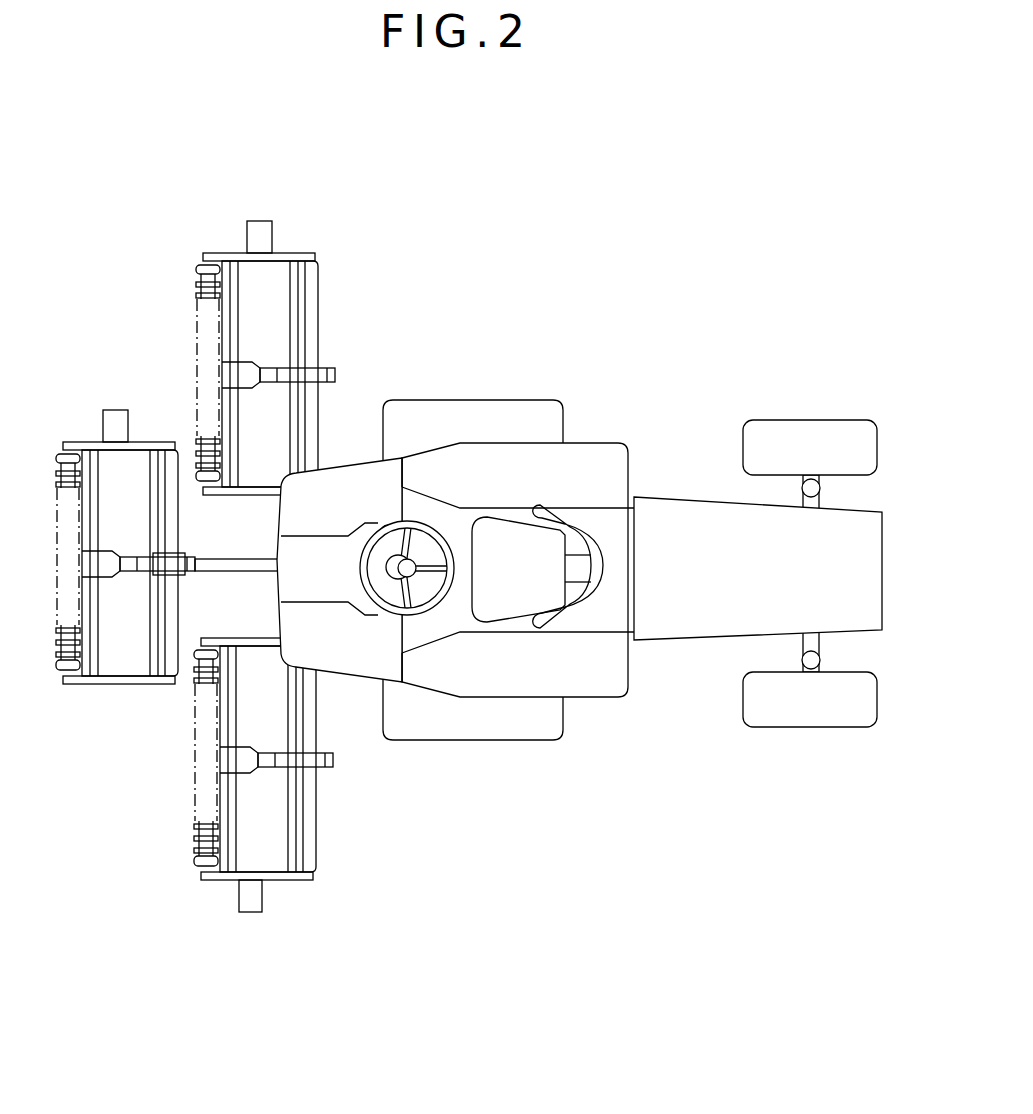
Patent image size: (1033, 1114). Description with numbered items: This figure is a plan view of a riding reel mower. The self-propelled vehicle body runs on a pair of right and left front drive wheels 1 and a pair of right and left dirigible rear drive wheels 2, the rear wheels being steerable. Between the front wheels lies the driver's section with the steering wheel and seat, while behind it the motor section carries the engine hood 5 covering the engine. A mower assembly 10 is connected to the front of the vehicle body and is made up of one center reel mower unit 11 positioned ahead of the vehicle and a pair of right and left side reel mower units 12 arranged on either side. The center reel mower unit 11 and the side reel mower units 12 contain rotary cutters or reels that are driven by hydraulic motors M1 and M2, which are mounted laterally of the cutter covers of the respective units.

The front drive wheels 1 is at (472, 418).
The rear drive wheels 2 is at (780, 420).
The engine hood 5 is at (683, 508).
The mower assembly 10 is at (247, 567).
The center reel mower unit 11 is at (122, 688).
The side reel mower units 12 is at (300, 253).
The hydraulic motor M1 is at (259, 230).
The hydraulic motor M2 is at (117, 420).